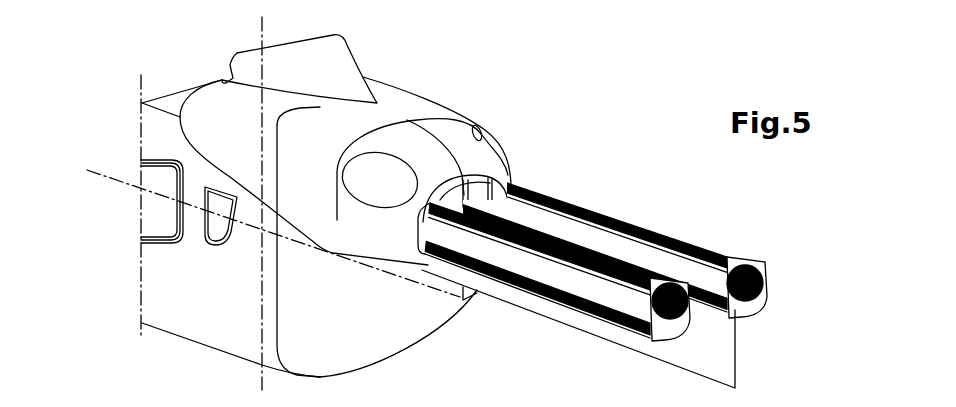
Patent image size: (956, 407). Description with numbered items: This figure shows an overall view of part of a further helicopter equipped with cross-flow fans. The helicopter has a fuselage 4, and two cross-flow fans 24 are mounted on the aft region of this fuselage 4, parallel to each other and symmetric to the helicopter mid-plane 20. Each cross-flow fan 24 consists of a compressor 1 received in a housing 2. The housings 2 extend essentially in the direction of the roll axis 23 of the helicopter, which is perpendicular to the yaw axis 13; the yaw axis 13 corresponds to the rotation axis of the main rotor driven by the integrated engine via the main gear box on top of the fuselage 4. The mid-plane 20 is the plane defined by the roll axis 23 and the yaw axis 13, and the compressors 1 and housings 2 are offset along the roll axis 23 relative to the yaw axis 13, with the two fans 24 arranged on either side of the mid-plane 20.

The compressor 1 is at (747, 257).
The housing 2 is at (766, 264).
The fuselage 4 is at (413, 110).
The yaw axis 13 is at (262, 33).
The helicopter mid-plane 20 is at (735, 345).
The roll axis 23 is at (118, 180).
The cross-flow fan 24 is at (613, 168).